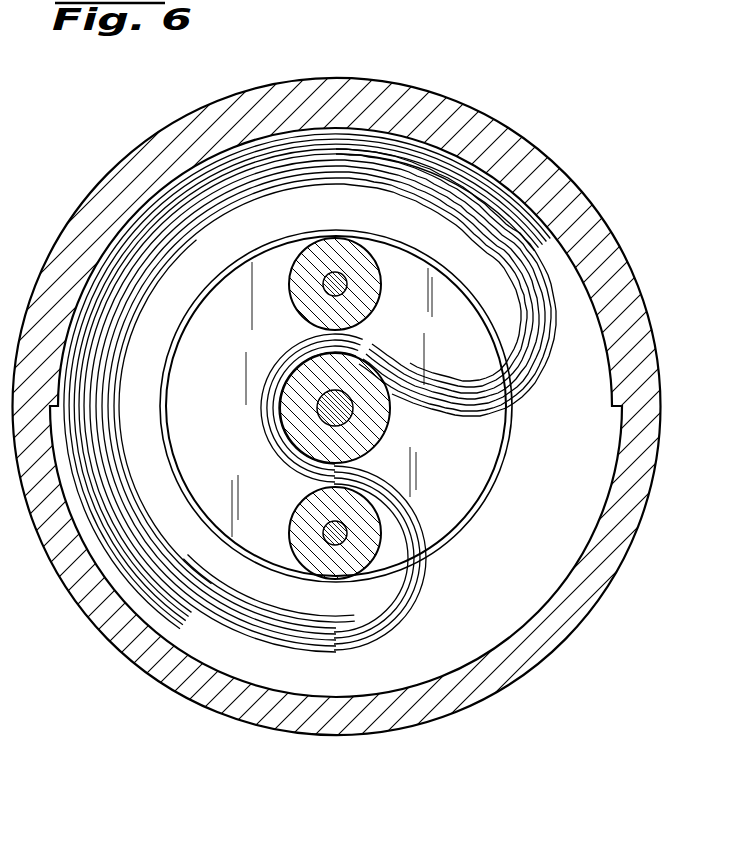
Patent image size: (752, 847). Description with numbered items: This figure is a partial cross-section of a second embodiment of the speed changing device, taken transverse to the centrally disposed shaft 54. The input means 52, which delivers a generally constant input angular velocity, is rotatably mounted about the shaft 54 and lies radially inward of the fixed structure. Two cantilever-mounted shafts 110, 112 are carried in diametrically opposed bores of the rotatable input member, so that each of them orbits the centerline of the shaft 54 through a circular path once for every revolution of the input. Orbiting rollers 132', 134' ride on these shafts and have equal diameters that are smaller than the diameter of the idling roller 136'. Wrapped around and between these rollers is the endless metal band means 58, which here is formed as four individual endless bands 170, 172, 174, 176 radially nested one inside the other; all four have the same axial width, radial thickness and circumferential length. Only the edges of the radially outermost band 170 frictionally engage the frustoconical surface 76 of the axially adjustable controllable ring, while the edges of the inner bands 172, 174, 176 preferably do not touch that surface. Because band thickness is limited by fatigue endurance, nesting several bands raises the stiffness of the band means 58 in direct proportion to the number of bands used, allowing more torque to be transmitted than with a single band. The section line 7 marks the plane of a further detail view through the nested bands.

The input means 52 is at (468, 509).
The centrally disposed shaft 54 is at (375, 426).
The endless metal band means 58 is at (158, 245).
The frustoconical surface 76 is at (97, 317).
The shaft 110 is at (322, 288).
The shaft 112 is at (322, 528).
The orbiting roller 132' is at (370, 326).
The orbiting roller 134' is at (241, 487).
The idling roller 136' is at (420, 476).
The radially outermost band 170 is at (561, 322).
The inner band 172 is at (540, 357).
The inner band 174 is at (509, 368).
The inner band 176 is at (458, 374).
The section line 7- 7 is at (420, 152).